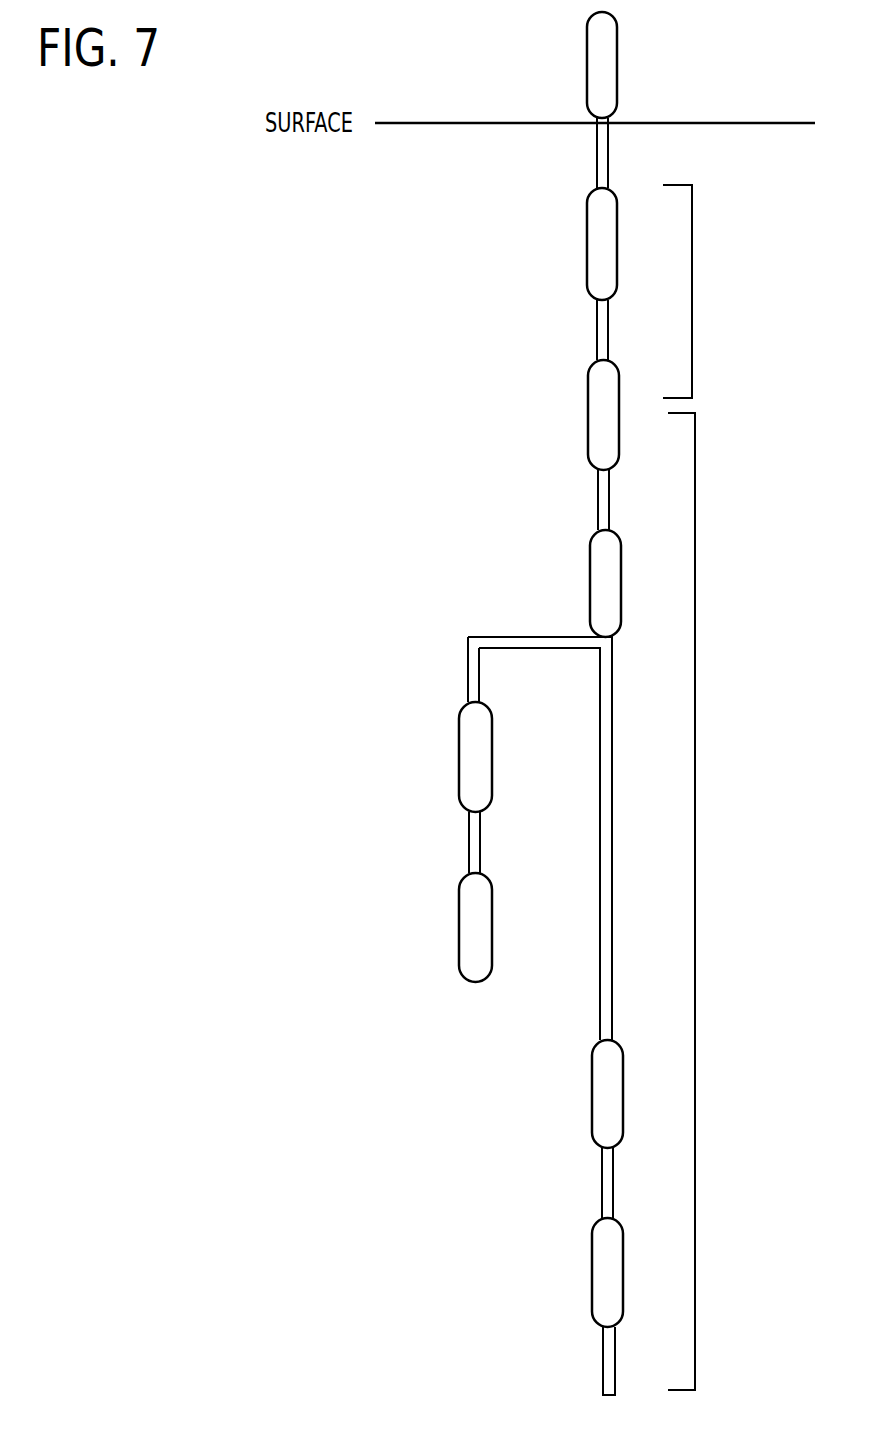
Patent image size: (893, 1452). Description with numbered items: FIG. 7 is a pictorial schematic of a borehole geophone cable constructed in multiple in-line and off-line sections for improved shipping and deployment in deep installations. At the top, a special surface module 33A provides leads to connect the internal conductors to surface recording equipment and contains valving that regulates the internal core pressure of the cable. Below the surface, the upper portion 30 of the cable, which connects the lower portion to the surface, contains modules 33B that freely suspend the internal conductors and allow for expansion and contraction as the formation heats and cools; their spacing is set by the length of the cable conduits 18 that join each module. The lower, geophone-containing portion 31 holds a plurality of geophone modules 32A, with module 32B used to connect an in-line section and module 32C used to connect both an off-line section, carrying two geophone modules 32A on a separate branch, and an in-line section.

The cable conduit 18 is at (597, 163).
The surface module 33A is at (587, 48).
The module 33B is at (587, 245).
The module 32C is at (590, 578).
The geophone module 32A is at (459, 747).
The module 32B is at (592, 1093).
The upper portion 30 is at (748, 300).
The lower portion 31 is at (755, 881).